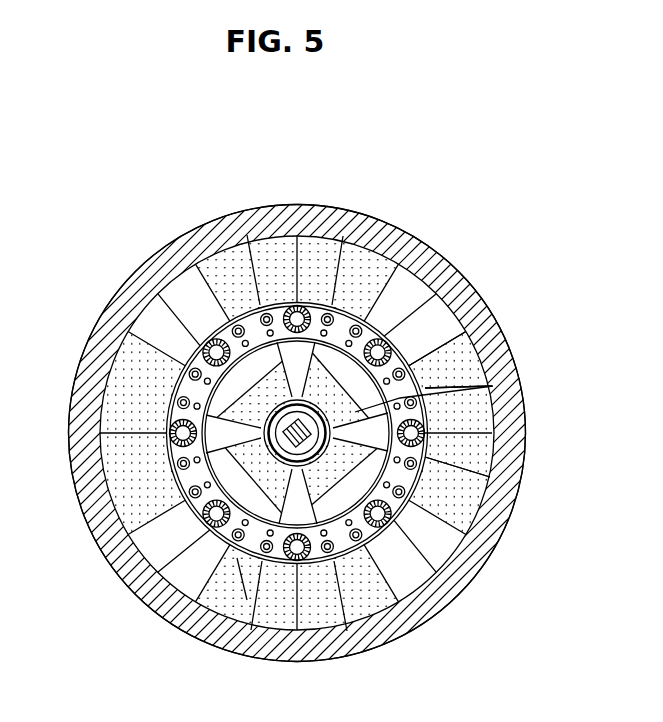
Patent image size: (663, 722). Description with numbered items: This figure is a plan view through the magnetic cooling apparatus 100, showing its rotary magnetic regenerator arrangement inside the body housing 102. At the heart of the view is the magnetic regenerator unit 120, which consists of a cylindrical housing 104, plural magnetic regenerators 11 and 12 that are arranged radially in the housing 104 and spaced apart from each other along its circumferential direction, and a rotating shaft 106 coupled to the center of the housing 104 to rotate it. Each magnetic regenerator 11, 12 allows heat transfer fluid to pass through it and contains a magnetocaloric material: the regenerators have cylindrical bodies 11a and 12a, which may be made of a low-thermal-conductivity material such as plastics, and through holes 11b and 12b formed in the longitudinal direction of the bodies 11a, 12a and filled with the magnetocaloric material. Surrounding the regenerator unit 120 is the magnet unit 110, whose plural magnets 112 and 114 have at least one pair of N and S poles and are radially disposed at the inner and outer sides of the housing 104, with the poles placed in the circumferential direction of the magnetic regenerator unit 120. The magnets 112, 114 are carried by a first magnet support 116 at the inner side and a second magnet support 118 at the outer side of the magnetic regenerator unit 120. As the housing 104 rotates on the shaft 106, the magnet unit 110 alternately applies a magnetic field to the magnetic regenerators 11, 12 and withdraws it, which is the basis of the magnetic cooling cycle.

The magnetic cooling apparatus 100 is at (86, 132).
The body housing 102 is at (512, 494).
The cylindrical housing 104 is at (237, 558).
The rotating shaft 106 is at (172, 465).
The magnet unit 110 is at (497, 382).
The magnet 112 is at (494, 392).
The magnet 114 is at (510, 430).
The first magnet support 116 is at (493, 386).
The second magnet support 118 is at (468, 321).
The magnetic regenerator unit 120 is at (214, 315).
The magnetic regenerator 11 is at (273, 149).
The cylindrical body 11a is at (296, 303).
The through hole 11b is at (307, 305).
The magnetic regenerator 12 is at (304, 396).
The cylindrical body 12a is at (413, 370).
The through hole 12b is at (390, 334).